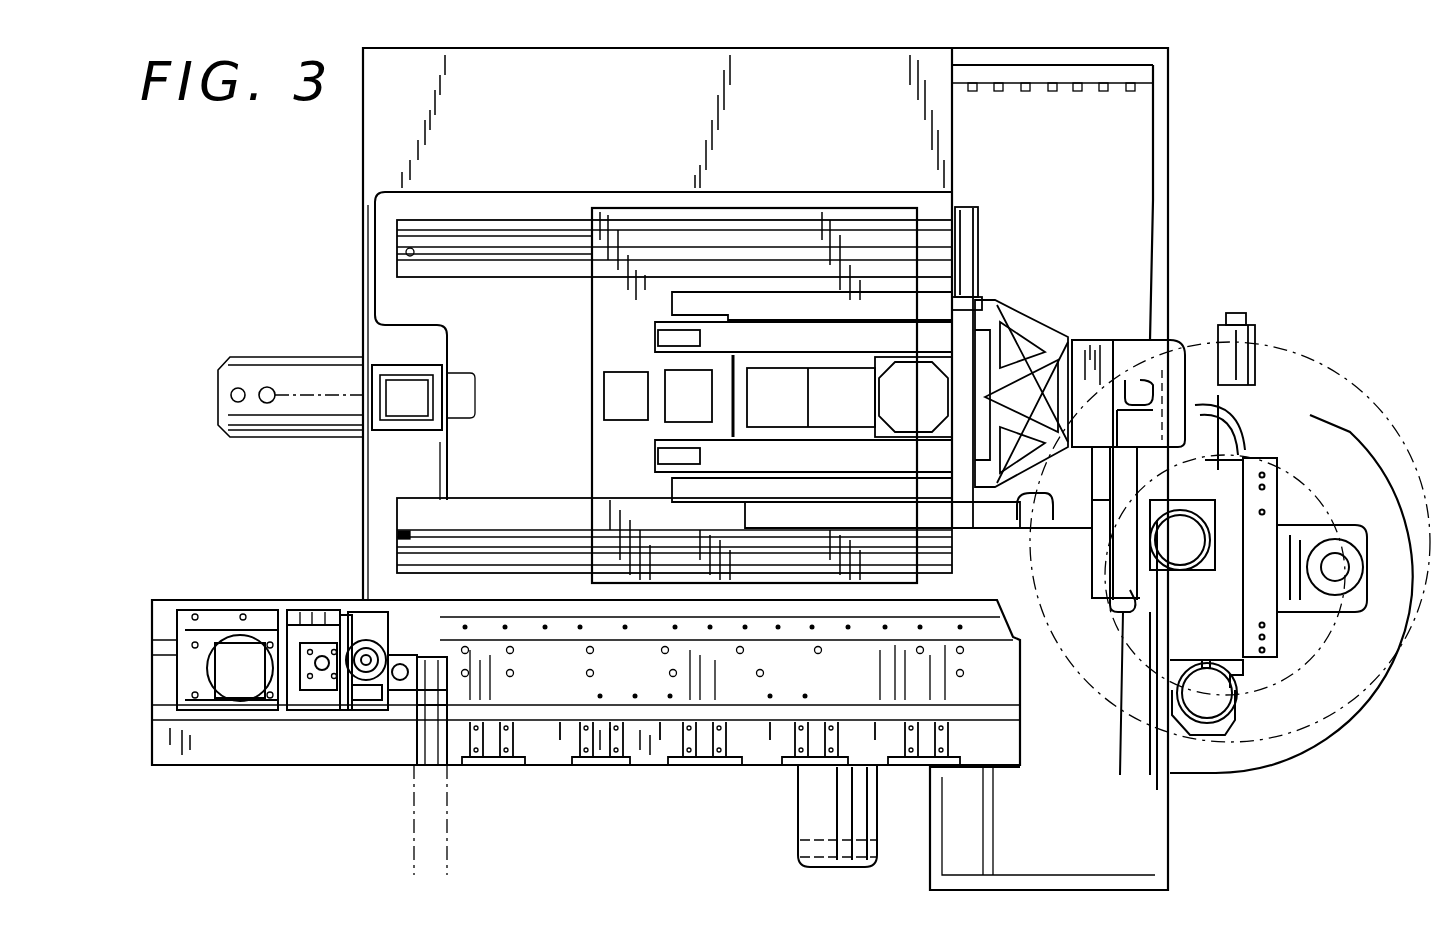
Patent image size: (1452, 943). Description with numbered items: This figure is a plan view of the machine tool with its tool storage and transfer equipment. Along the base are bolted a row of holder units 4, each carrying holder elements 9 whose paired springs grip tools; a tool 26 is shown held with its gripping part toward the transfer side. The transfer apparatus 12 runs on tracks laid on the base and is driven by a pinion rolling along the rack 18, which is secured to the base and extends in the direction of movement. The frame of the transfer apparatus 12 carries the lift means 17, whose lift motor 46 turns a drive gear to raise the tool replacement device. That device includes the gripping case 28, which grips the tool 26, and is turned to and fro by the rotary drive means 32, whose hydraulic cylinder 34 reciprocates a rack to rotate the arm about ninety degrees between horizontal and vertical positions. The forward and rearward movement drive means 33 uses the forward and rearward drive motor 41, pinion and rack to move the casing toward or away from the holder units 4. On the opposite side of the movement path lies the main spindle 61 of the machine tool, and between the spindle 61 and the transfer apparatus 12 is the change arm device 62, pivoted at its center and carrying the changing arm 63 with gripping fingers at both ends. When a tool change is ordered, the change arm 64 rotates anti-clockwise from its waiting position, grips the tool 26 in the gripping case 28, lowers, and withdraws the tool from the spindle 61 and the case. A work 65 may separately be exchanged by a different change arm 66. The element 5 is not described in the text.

The holder unit 4 is at (485, 772).
The guide bracket 5 is at (605, 748).
The holder element 9 is at (525, 772).
The transfer apparatus 12 is at (267, 735).
The lift means 17 is at (300, 618).
The rack 18 is at (788, 650).
The tool 26 is at (410, 818).
The gripping case 28 is at (418, 703).
The rotary drive means 32 is at (426, 636).
The forward and rearward movement drive means 33 is at (368, 622).
The hydraulic cylinder 34 is at (396, 662).
The forward and rearward drive motor 41 is at (323, 620).
The lift motor 46 is at (318, 690).
The main spindle 61 is at (1122, 328).
The change arm device 62 is at (1100, 560).
The changing arm 63 is at (1070, 525).
The change arm 64 is at (1167, 347).
The work 65 is at (1372, 548).
The different change arm 66 is at (1238, 677).